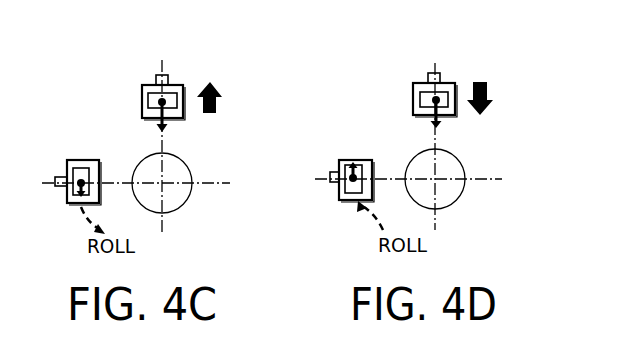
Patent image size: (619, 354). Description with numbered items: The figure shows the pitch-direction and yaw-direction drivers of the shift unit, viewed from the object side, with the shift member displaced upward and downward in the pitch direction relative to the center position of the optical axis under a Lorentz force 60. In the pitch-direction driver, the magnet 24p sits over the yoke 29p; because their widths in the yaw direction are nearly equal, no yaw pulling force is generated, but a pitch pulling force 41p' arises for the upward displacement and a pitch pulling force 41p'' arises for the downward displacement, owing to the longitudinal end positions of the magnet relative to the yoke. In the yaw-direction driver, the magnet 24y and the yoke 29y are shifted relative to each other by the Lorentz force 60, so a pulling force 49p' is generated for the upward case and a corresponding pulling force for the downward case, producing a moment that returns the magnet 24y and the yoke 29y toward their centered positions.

In FIG. 4C, the magnet 24p is at (172, 92).
In FIG. 4D, the magnet 24p is at (452, 85).
In FIG. 4C, the yoke 29p is at (163, 78).
In FIG. 4D, the yoke 29p is at (438, 73).
In FIG. 4C, the pulling force 41p' is at (137, 88).
In FIG. 4D, the pulling force 41p'' is at (405, 85).
In FIG. 4C, the magnet 24y is at (72, 168).
In FIG. 4D, the magnet 24y is at (340, 165).
In FIG. 4C, the yoke 29y is at (60, 183).
In FIG. 4D, the yoke 29y is at (333, 182).
In FIG. 4C, the pulling force 49p' is at (100, 157).
In FIG. 4D, the pulling force 49p' is at (372, 156).
In FIG. 4C, the Lorentz force 60 is at (210, 113).
In FIG. 4D, the Lorentz force 60 is at (485, 112).